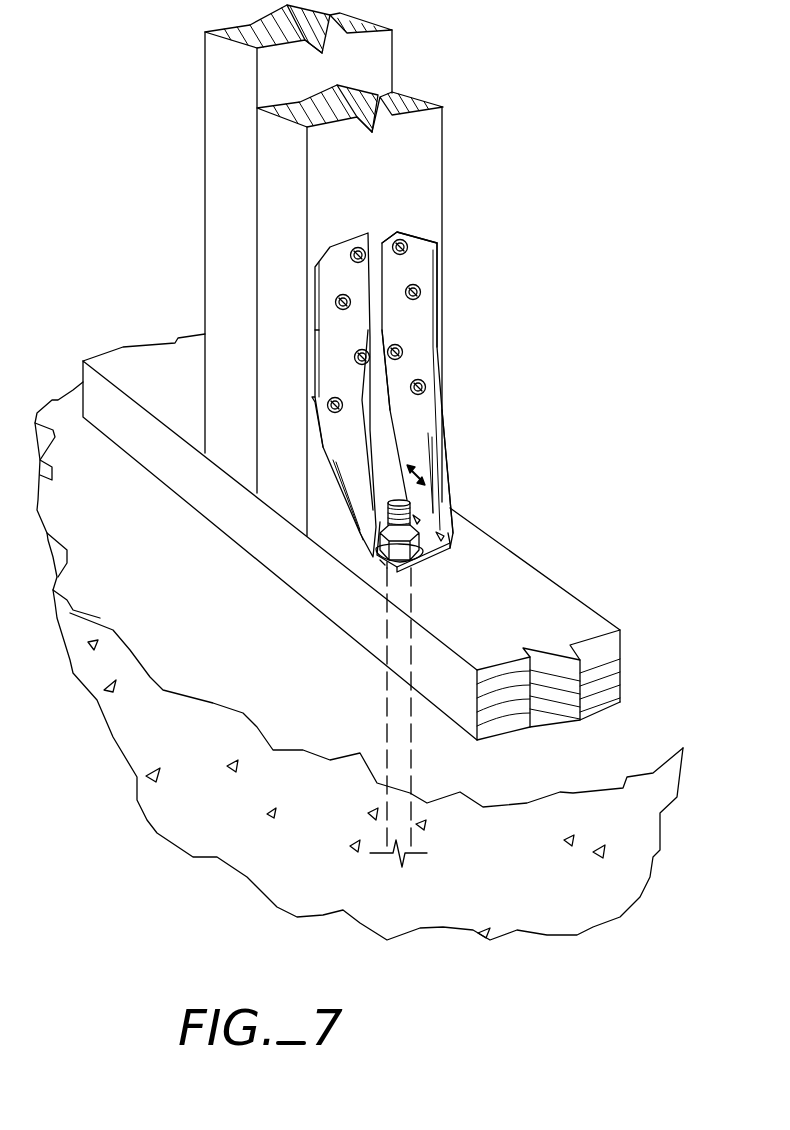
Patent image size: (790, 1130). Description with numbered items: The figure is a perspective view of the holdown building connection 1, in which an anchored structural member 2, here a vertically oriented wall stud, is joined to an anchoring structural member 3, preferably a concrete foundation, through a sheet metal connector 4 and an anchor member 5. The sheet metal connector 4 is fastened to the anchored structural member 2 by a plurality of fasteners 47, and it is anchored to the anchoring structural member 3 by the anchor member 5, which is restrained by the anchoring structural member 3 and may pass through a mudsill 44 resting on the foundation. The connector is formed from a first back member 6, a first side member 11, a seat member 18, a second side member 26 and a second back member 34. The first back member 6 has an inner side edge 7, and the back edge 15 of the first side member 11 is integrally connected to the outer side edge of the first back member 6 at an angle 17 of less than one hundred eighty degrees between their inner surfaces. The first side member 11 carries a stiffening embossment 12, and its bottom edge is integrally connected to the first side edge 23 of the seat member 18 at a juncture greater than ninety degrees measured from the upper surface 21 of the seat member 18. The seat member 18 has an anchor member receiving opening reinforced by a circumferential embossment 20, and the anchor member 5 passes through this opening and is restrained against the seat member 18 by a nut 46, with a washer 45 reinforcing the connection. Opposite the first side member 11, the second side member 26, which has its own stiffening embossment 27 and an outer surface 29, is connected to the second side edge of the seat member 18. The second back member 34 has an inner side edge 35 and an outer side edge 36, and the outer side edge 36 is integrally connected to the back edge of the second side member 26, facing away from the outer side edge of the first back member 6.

The building connection 1 is at (323, 384).
The anchored structural member 2 is at (442, 198).
The anchoring structural member 3 is at (633, 740).
The sheet metal connector 4 is at (448, 292).
The anchor member 5 is at (410, 507).
The first back member 6 is at (433, 240).
The inner side edge 7 is at (437, 258).
The first side member 11 is at (447, 430).
The stiffening embossment 12 is at (432, 437).
The back edge 15 is at (433, 423).
The angle 17 is at (420, 467).
The seat member 18 is at (418, 550).
The circumferential embossment 20 is at (392, 557).
The upper surface 21 is at (433, 560).
The first side edge 23 is at (430, 527).
The second side member 26 is at (327, 450).
The stiffening embossment 27 is at (343, 480).
The outer surface 29 is at (350, 522).
The second back member 34 is at (322, 255).
The inner side edge 35 is at (375, 330).
The outer side edge 36 is at (315, 330).
The mudsill 44 is at (587, 603).
The washer 45 is at (417, 563).
The nut 46 is at (390, 560).
The fasteners 47 is at (350, 252).